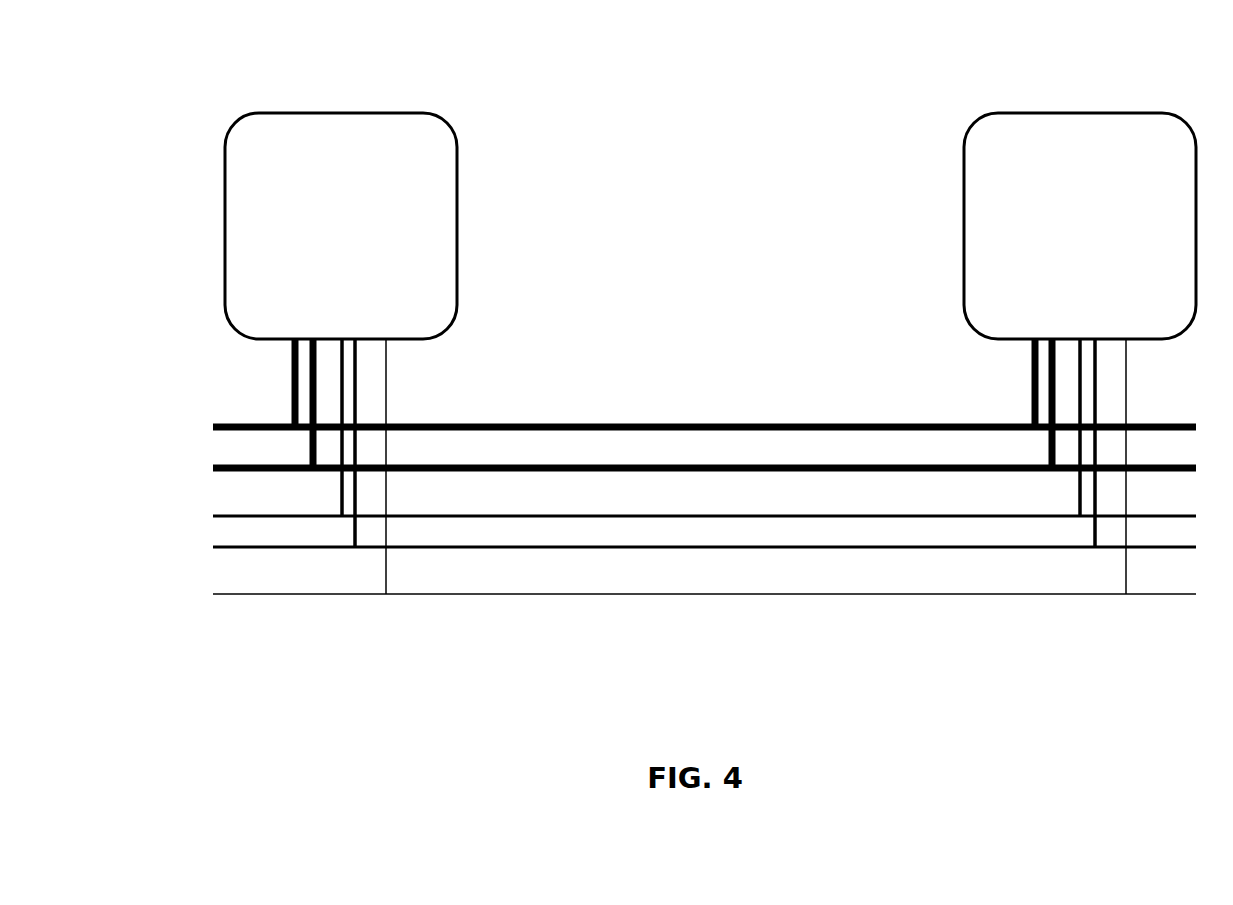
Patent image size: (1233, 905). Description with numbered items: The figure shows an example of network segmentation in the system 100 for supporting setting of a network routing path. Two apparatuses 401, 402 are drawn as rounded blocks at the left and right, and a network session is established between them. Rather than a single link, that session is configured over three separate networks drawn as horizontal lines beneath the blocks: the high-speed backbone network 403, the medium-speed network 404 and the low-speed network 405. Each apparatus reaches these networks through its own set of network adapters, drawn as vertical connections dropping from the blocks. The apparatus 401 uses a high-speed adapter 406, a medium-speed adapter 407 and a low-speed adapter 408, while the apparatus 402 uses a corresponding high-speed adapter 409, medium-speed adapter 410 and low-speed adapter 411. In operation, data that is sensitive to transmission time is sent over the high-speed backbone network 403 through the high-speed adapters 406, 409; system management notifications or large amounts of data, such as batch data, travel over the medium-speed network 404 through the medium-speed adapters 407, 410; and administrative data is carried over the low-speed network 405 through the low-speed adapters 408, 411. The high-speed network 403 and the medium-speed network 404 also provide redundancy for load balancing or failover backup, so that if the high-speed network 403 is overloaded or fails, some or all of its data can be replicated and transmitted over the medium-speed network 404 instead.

The system for supporting setting of a network routing path 100 is at (175, 41).
The apparatus 401 is at (341, 226).
The apparatus 402 is at (1080, 226).
The high-speed backbone network 403 is at (715, 466).
The medium-speed network 404 is at (767, 518).
The low-speed network 405 is at (872, 596).
The high-speed adapter 406 is at (308, 395).
The medium-speed adapter 407 is at (344, 347).
The low-speed adapter 408 is at (387, 400).
The high-speed adapter 409 is at (1048, 395).
The medium-speed adapter 410 is at (1083, 354).
The low-speed adapter 411 is at (1127, 404).